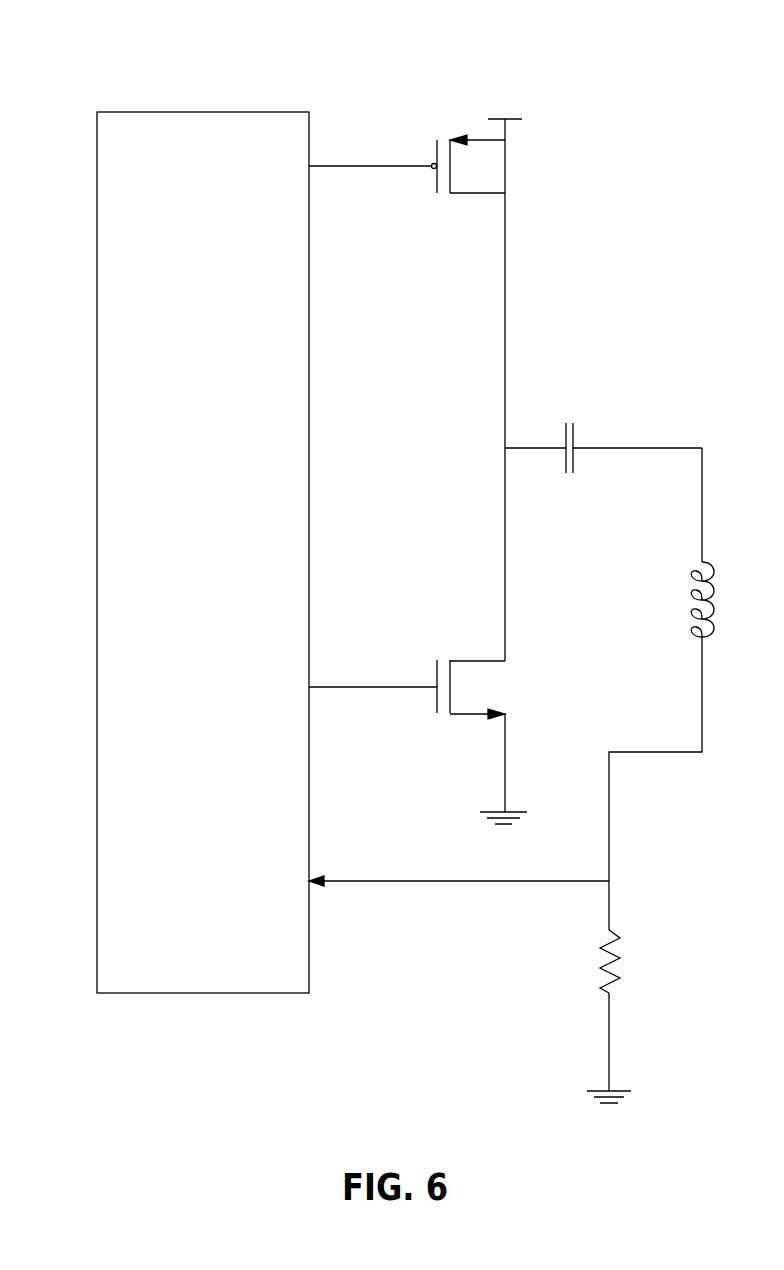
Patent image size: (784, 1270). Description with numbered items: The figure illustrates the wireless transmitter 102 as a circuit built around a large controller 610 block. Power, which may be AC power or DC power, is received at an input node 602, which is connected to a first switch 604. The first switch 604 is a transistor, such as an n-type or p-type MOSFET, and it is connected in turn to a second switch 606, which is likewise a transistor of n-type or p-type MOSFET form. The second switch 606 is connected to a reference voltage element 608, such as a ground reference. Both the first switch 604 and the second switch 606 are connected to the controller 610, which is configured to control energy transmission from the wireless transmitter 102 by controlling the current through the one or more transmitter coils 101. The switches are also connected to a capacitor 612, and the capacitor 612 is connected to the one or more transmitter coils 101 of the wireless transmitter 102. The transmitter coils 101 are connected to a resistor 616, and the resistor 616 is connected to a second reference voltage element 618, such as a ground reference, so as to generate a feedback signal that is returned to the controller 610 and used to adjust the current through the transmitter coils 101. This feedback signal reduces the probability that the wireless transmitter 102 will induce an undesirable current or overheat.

The wireless transmitter 102 is at (120, 55).
The controller 610 is at (97, 210).
The input node 602 is at (515, 117).
The first switch 604 is at (492, 192).
The capacitor 612 is at (573, 440).
The transmitter coils 101 is at (690, 587).
The second switch 606 is at (481, 660).
The reference voltage element 608 is at (490, 812).
The resistor 616 is at (622, 957).
The second reference voltage element 618 is at (628, 1090).